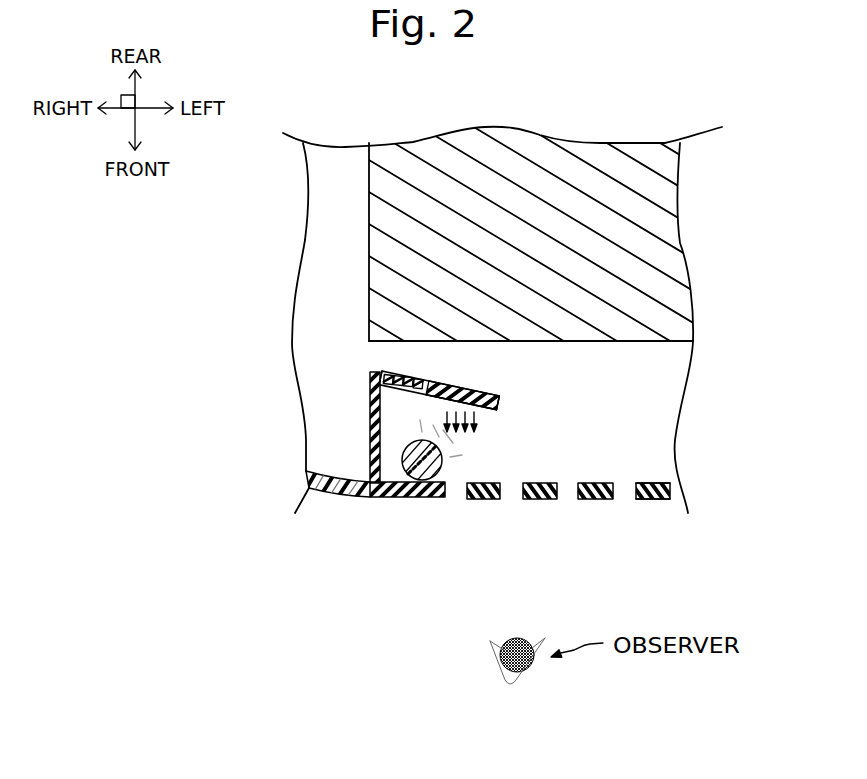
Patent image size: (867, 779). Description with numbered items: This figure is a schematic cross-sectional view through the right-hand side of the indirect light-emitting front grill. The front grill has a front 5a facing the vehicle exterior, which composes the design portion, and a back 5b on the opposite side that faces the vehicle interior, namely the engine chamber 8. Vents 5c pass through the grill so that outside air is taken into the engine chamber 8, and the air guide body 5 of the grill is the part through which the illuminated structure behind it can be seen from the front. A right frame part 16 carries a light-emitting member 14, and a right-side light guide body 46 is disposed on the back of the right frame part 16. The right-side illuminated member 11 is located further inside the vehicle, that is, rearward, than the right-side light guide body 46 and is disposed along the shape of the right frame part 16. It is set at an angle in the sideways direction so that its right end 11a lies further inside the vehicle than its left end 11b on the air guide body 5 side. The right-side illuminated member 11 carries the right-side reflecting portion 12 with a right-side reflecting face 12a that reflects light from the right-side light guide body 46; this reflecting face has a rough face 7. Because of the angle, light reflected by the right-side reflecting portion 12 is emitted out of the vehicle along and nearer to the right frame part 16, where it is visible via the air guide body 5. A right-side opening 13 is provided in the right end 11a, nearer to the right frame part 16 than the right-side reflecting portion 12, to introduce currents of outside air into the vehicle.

The air guide body 5 is at (738, 448).
The front of the front grill 5a is at (655, 509).
The back of the front grill 5b is at (665, 474).
The vents 5c is at (623, 504).
The rough face 7 is at (515, 435).
The engine chamber 8 is at (387, 237).
The right-side illuminated member 11 is at (513, 388).
The right end 11a is at (385, 370).
The left end 11b is at (502, 410).
The right-side reflecting portion 12 is at (486, 390).
The right-side reflecting face 12a is at (489, 421).
The right-side opening 13 is at (398, 368).
The light-emitting member 14 is at (394, 447).
The right frame part 16 is at (405, 497).
The right-side light guide body 46 is at (435, 475).